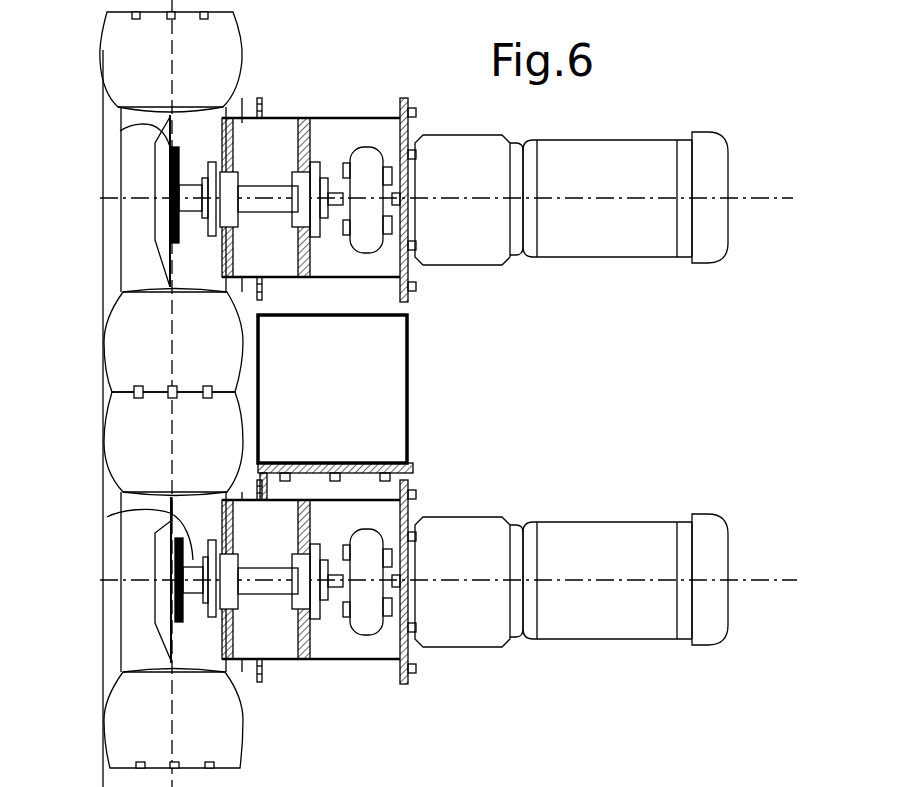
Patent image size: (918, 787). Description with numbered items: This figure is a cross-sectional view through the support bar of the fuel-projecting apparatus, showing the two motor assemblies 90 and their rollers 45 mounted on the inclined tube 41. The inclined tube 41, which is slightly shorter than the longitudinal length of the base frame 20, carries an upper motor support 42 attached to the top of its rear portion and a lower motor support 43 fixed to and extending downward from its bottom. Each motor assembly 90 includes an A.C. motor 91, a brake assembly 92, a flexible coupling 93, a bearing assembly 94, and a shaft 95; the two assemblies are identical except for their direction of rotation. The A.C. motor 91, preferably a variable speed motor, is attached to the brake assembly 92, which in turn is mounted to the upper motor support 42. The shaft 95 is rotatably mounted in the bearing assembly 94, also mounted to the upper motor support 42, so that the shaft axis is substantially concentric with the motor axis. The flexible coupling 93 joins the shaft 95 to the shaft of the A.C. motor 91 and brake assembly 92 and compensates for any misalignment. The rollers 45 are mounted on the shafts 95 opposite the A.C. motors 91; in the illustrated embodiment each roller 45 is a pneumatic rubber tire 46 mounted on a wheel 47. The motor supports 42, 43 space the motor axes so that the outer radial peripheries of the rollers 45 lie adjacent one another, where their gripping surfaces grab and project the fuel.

The base frame 20 is at (469, 786).
The inclined tube 41 is at (410, 402).
The upper motor support 42 is at (265, 115).
The lower motor support 43 is at (413, 487).
The roller 45 is at (98, 49).
The pneumatic rubber tire 46 is at (118, 108).
The wheel 47 is at (120, 131).
The motor assembly 90 is at (730, 157).
The A.C. motor 91 is at (600, 258).
The brake assembly 92 is at (462, 264).
The flexible coupling 93 is at (367, 642).
The bearing assembly 94 is at (338, 642).
The shaft 95 is at (107, 517).